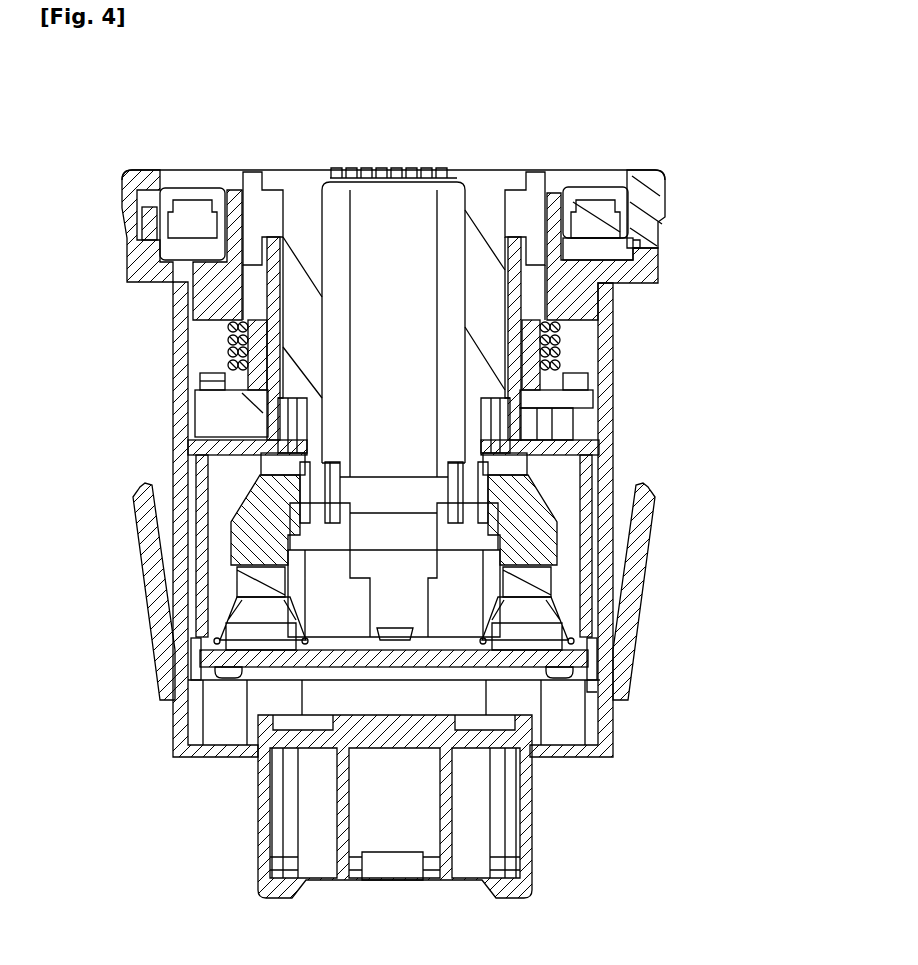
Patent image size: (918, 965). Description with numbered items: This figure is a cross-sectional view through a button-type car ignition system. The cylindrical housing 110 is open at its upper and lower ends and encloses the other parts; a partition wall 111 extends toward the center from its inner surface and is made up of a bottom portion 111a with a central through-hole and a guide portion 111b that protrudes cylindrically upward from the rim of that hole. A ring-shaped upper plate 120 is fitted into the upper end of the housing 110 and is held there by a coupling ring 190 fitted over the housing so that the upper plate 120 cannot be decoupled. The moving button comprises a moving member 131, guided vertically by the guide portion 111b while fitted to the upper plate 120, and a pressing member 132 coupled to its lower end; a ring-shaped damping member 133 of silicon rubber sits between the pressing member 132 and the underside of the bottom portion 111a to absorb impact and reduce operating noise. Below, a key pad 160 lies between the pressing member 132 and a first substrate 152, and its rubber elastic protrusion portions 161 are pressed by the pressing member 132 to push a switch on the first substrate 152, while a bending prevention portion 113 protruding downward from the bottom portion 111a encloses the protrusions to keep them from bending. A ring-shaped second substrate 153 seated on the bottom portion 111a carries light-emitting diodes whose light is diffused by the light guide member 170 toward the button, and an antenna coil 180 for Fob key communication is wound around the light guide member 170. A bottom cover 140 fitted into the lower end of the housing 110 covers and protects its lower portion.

The housing 110 is at (176, 308).
The partition wall 111 is at (727, 332).
The bottom portion 111a is at (555, 425).
The guide portion 111b is at (557, 323).
The bending prevention portion 113 is at (583, 577).
The upper plate 120 is at (597, 205).
The moving member 131 is at (485, 190).
The pressing member 132 is at (527, 510).
The damping member 133 is at (508, 466).
The bottom cover 140 is at (568, 748).
The first substrate 152 is at (208, 658).
The second substrate 153 is at (208, 406).
The key pad 160 is at (470, 655).
The elastic protrusion portions 161 is at (563, 608).
The light guide member 170 is at (575, 248).
The antenna coil 180 is at (230, 347).
The coupling ring 190 is at (655, 172).